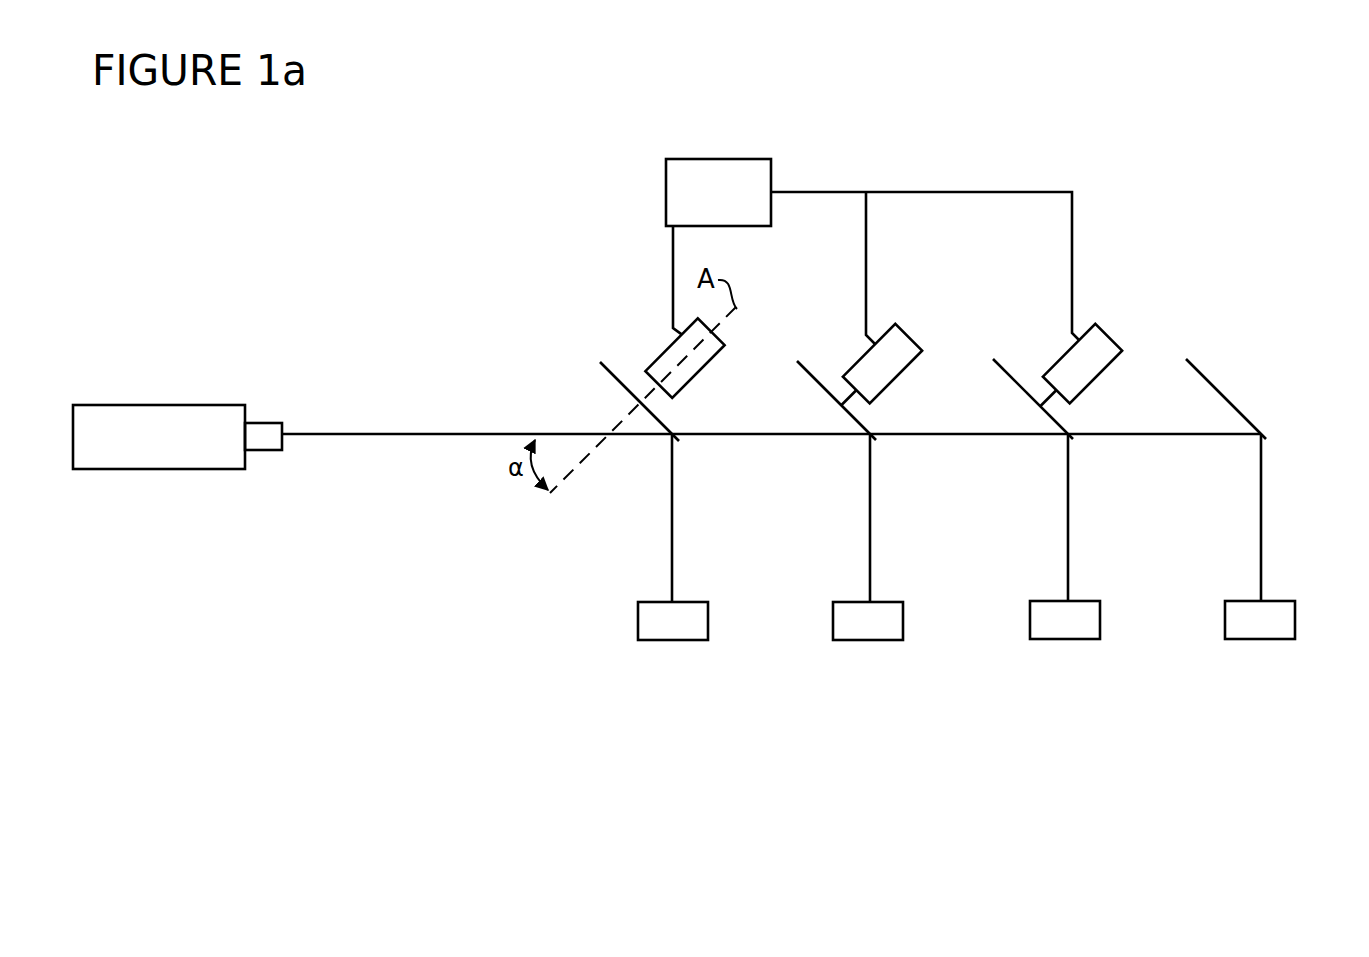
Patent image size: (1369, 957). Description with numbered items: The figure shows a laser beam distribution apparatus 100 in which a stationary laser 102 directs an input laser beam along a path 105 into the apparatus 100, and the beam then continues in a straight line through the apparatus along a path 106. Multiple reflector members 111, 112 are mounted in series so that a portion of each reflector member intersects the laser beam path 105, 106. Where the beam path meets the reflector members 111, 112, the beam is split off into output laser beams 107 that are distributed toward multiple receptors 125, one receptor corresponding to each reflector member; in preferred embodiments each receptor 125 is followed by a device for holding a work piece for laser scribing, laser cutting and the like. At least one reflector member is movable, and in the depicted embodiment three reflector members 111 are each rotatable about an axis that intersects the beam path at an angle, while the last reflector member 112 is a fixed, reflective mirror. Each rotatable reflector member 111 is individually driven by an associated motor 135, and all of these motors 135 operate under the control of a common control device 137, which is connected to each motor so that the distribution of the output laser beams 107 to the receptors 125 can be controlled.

The laser beam distribution apparatus 100 is at (320, 320).
The stationary laser 102 is at (131, 457).
The path 105 is at (355, 438).
The path 106 is at (755, 434).
The output laser beams 107 is at (672, 535).
The reflector members 111 is at (600, 368).
The reflector member 112 is at (1213, 383).
The receptors 125 is at (670, 640).
The motor 135 is at (678, 382).
The control device 137 is at (666, 197).